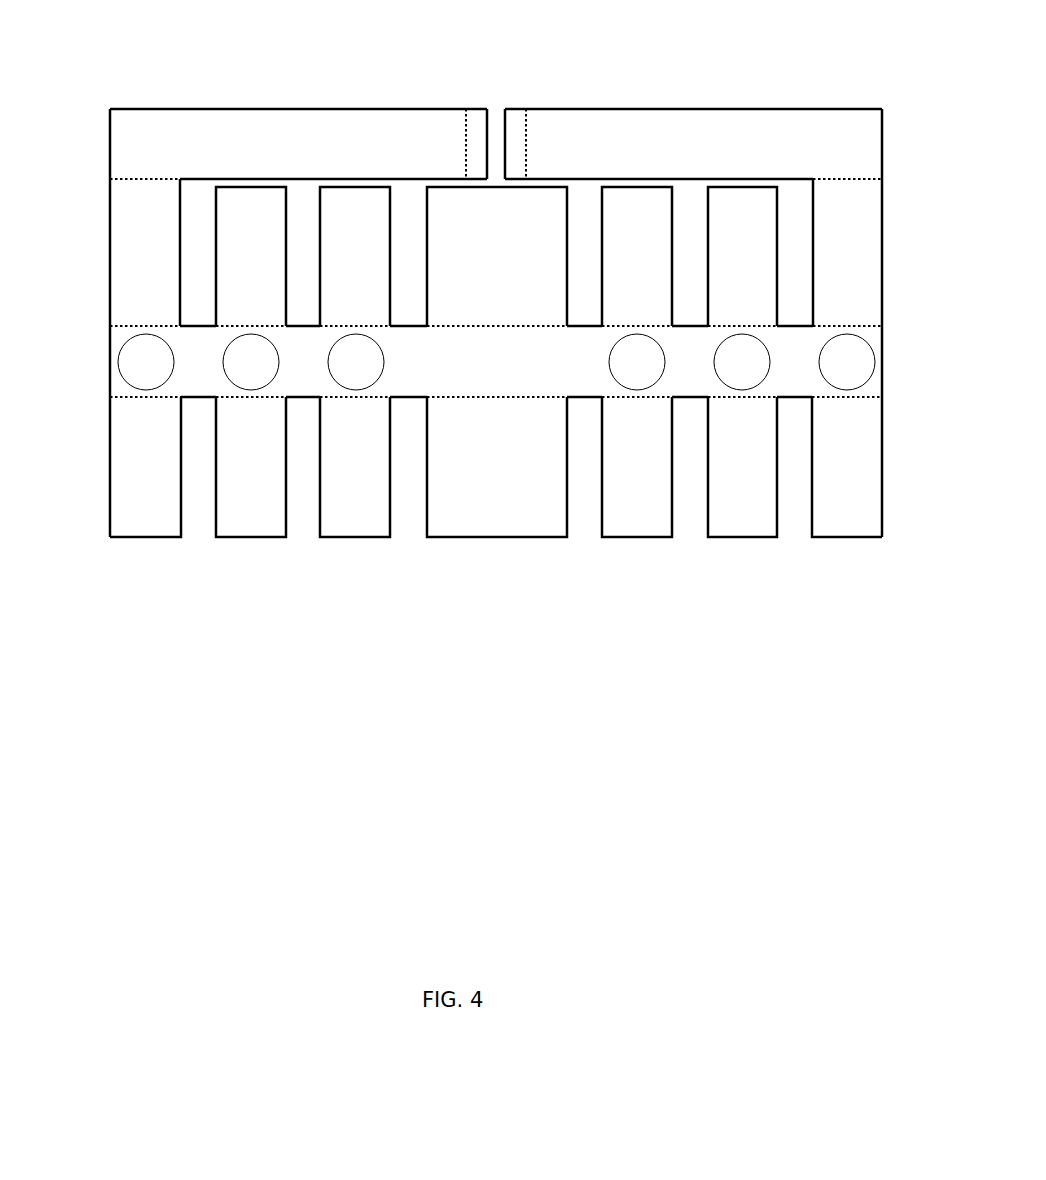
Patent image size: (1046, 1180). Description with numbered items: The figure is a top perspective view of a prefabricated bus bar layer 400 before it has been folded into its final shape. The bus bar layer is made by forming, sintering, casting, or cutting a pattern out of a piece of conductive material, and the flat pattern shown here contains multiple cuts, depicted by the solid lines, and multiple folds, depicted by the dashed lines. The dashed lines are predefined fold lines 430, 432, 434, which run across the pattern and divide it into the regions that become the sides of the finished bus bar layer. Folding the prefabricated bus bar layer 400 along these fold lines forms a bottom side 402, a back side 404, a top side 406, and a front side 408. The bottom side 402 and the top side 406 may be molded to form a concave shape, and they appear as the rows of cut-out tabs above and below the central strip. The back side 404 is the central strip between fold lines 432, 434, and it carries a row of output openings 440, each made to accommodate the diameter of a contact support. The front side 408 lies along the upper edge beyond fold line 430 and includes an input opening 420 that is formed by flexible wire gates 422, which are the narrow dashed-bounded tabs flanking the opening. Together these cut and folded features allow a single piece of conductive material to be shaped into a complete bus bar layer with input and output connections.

The prefabricated bus bar layer 400 is at (674, 663).
The bottom side 402 is at (849, 485).
The back side 404 is at (873, 385).
The top side 406 is at (847, 255).
The front side 408 is at (843, 156).
The input opening 420 is at (493, 145).
The flexible wire gate 422 is at (475, 143).
The fold line 430 is at (132, 179).
The fold line 432 is at (130, 325).
The fold line 434 is at (130, 397).
The output opening 440 is at (150, 361).